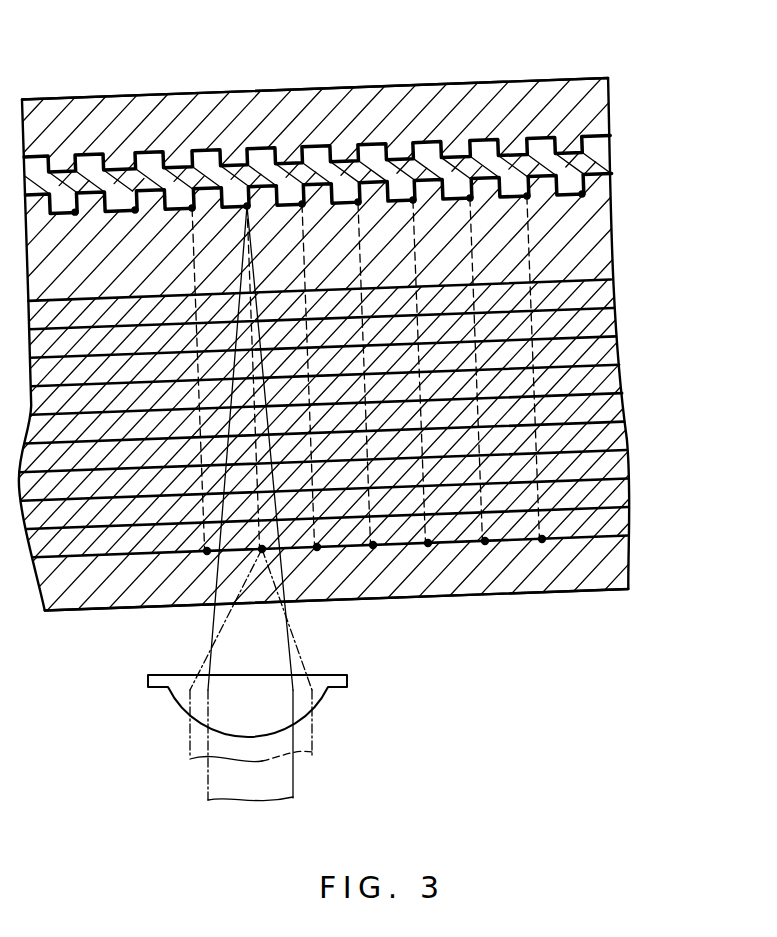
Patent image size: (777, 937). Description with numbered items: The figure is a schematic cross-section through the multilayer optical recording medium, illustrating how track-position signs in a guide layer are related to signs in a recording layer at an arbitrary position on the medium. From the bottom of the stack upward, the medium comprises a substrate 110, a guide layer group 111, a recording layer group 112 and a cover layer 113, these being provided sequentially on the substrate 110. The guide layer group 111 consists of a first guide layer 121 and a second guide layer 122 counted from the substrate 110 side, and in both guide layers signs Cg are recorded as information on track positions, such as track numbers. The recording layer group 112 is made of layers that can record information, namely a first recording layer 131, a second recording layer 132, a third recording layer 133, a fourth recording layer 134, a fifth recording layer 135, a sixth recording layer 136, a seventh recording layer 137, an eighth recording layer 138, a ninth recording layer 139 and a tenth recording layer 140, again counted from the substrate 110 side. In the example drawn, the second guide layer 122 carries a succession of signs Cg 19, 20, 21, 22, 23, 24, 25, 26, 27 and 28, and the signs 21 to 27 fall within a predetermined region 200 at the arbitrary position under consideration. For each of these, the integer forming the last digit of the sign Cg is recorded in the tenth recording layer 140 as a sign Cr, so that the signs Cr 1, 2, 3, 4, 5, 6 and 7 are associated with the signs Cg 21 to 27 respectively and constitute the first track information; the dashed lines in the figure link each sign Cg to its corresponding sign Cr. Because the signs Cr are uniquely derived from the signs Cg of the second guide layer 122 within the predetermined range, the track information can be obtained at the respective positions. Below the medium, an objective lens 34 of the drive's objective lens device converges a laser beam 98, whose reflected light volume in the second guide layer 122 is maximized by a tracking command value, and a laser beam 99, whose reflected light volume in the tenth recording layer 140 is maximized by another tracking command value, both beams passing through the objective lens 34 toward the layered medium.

The substrate 110 is at (596, 97).
The guide layer group 111 is at (373, 159).
The first guide layer 121 is at (595, 137).
The second guide layer 122 is at (595, 175).
The recording layer group 112 is at (380, 400).
The first recording layer 131 is at (597, 268).
The second recording layer 132 is at (597, 298).
The third recording layer 133 is at (597, 327).
The fourth recording layer 134 is at (597, 356).
The fifth recording layer 135 is at (597, 386).
The sixth recording layer 136 is at (597, 416).
The seventh recording layer 137 is at (597, 445).
The eighth recording layer 138 is at (597, 474).
The ninth recording layer 139 is at (597, 504).
The tenth recording layer 140 is at (357, 537).
The cover layer 113 is at (617, 574).
The gap Cg 19 is at (75, 212).
The gap Cg 20 is at (135, 210).
The sign Cg 21 is at (192, 208).
The sign Cg 22 is at (247, 206).
The sign Cg 23 is at (302, 204).
The sign Cg 24 is at (358, 202).
The sign Cg 25 is at (413, 200).
The sign Cg 26 is at (470, 198).
The sign Cg 27 is at (527, 196).
The gap Cg 28 is at (582, 194).
The sign Cr1 1 is at (207, 551).
The sign Cr1 2 is at (262, 549).
The sign Cr1 3 is at (317, 547).
The sign Cr1 4 is at (373, 545).
The sign Cr1 5 is at (428, 543).
The sign Cr1 6 is at (485, 541).
The sign Cr1 7 is at (542, 539).
The predetermined region 200 is at (143, 648).
The objective lens 34 is at (176, 700).
The laser beam 99 is at (312, 746).
The laser beam 98 is at (293, 792).